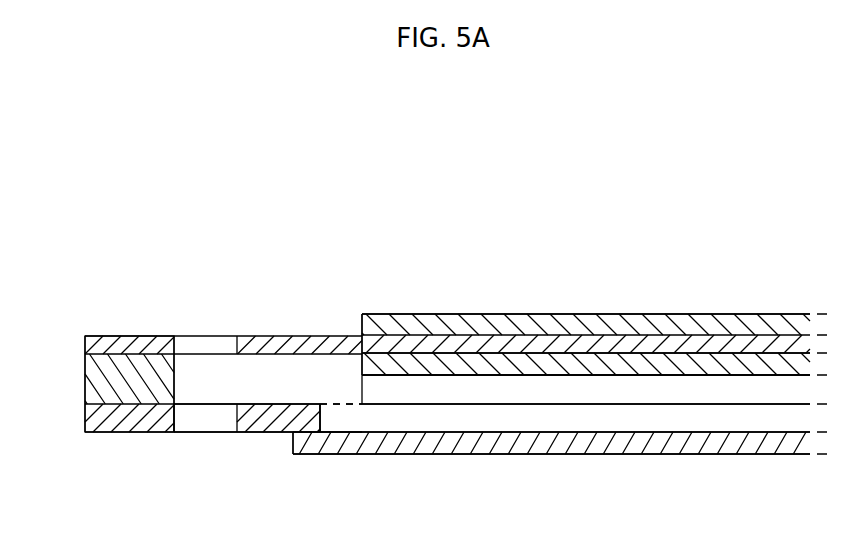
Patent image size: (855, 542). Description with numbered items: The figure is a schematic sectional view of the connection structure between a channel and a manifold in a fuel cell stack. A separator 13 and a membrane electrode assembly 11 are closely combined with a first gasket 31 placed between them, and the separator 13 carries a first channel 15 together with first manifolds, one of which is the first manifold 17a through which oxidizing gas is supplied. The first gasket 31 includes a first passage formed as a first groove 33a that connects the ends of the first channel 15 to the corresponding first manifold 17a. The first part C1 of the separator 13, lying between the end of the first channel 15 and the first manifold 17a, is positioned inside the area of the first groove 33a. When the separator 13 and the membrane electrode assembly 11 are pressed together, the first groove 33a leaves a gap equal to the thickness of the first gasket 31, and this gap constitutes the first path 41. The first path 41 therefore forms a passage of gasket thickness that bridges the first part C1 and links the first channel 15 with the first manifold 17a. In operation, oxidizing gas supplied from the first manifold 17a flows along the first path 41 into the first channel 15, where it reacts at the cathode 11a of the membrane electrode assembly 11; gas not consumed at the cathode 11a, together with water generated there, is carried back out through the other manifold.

The first gasket 31 is at (84, 383).
The first groove 33a is at (250, 384).
The first part C1 is at (305, 403).
The membrane electrode assembly 11 is at (488, 313).
The cathode 11a is at (623, 365).
The first manifold 17a is at (210, 433).
The first path 41 is at (340, 406).
The separator 13 is at (503, 455).
The first channel 15 is at (657, 412).